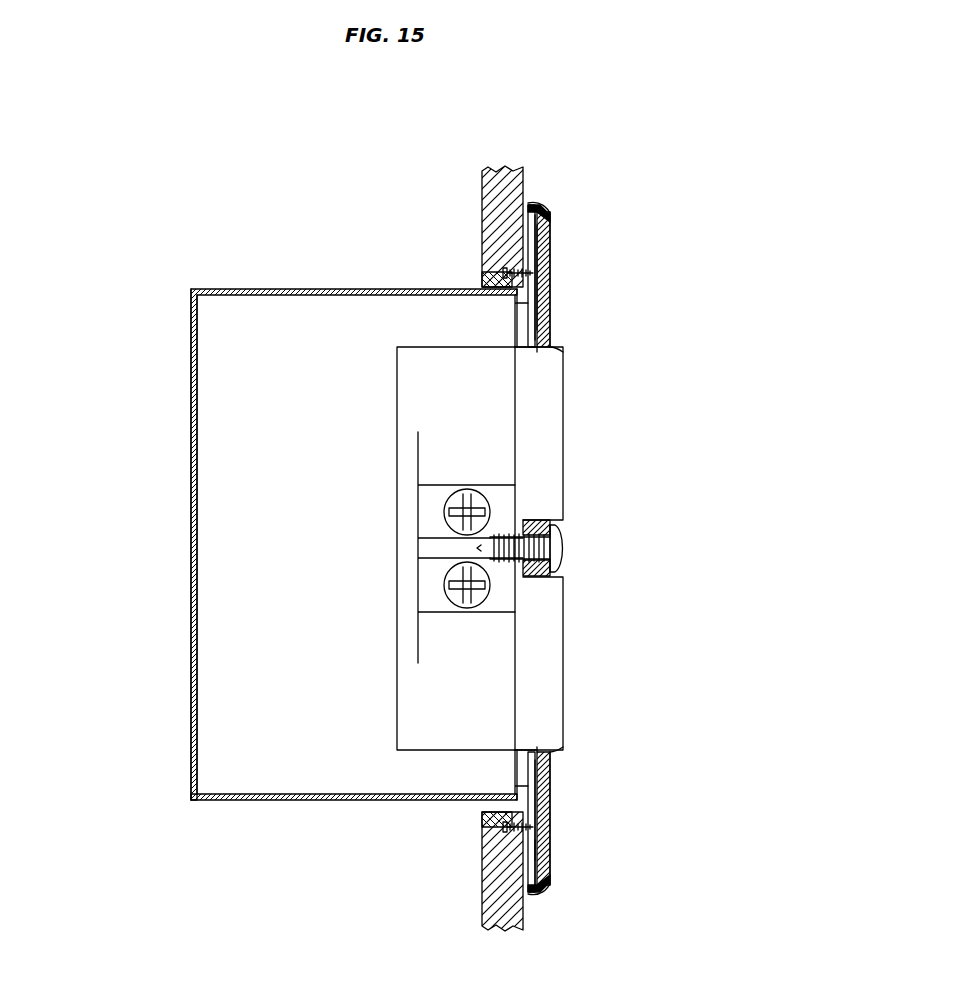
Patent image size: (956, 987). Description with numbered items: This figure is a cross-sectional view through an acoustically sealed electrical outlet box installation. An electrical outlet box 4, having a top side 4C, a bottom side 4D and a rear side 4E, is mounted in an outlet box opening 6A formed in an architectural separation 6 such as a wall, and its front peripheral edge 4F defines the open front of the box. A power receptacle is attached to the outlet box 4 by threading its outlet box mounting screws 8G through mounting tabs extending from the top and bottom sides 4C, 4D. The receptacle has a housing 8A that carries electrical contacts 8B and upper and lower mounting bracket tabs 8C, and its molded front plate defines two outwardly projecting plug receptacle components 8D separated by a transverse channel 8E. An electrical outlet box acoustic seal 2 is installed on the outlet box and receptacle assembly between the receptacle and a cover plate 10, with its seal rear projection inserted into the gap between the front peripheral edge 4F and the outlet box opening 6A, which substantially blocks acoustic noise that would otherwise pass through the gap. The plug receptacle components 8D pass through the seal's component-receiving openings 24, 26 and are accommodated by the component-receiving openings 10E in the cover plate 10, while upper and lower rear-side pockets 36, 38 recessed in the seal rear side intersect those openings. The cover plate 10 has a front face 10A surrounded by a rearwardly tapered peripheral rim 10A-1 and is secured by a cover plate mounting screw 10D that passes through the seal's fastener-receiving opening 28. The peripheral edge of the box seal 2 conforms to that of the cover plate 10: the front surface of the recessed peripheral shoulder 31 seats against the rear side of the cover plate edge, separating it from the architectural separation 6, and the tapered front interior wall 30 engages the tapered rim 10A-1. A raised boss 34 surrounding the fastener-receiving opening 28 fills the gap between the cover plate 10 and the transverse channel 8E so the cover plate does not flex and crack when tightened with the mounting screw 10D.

The electrical outlet box acoustic seal 2 is at (550, 340).
The electrical outlet box 4 is at (295, 542).
The top side 4C is at (218, 289).
The bottom side 4D is at (292, 800).
The rear side 4E is at (191, 470).
The front peripheral edge 4F is at (527, 303).
The architectural separation 6 is at (482, 198).
The outlet box opening 6A is at (482, 284).
The housing 8A is at (440, 403).
The electrical contacts 8B is at (450, 578).
The twin-eared mounting bracket tabs 8C is at (527, 344).
The plug receptacle components 8D is at (563, 426).
The transverse channel 8E is at (540, 580).
The outlet box mounting screws 8G is at (508, 273).
The cover plate 10 is at (545, 280).
The front face 10A is at (548, 318).
The rearwardly tapered peripheral rim 10A-1 is at (540, 210).
The cover plate mounting screw 10D is at (563, 548).
The component-receiving openings 10E is at (556, 352).
The component-receiving opening 24 is at (548, 352).
The component-receiving opening 26 is at (540, 752).
The fastener-receiving opening 28 is at (550, 568).
The front interior wall 30 is at (548, 212).
The recessed peripheral shoulder 31 is at (538, 210).
The raised boss 34 is at (535, 520).
The upper rear-side pocket 36 is at (533, 260).
The lower rear-side pocket 38 is at (548, 852).